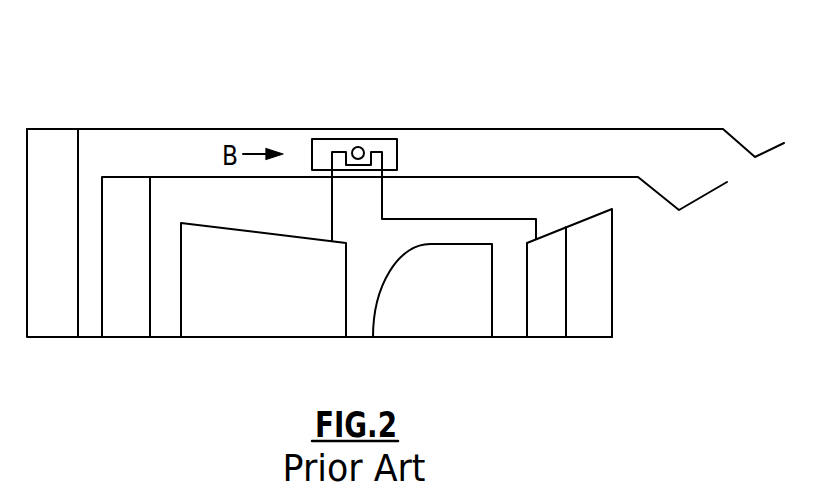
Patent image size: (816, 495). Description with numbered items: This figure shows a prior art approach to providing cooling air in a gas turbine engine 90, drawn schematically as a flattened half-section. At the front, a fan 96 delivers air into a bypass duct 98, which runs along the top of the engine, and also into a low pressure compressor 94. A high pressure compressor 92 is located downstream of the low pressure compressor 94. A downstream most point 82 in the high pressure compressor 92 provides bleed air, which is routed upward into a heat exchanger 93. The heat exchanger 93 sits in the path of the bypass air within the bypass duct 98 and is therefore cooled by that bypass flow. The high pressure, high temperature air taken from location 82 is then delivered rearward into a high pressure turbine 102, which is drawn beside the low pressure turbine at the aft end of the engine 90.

The engine 90 is at (325, 64).
The fan 96 is at (58, 152).
The bypass duct 98 is at (198, 150).
The low pressure compressor 94 is at (127, 322).
The high pressure compressor 92 is at (302, 318).
The heat exchanger 93 is at (312, 129).
The downstream most point 82 is at (333, 241).
The high pressure turbine 102 is at (545, 250).